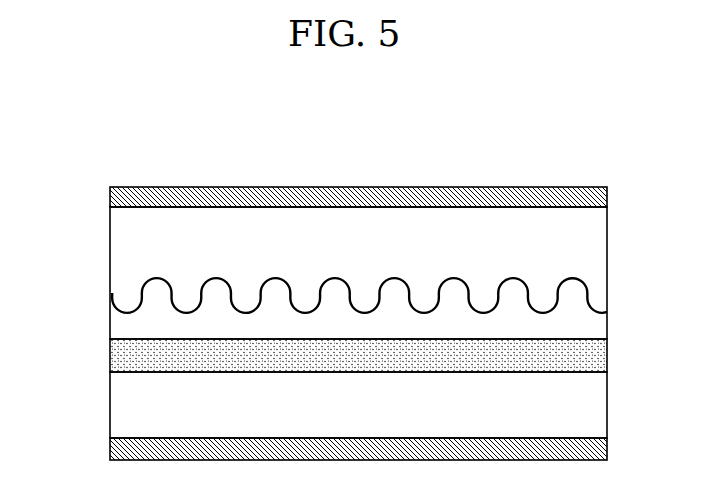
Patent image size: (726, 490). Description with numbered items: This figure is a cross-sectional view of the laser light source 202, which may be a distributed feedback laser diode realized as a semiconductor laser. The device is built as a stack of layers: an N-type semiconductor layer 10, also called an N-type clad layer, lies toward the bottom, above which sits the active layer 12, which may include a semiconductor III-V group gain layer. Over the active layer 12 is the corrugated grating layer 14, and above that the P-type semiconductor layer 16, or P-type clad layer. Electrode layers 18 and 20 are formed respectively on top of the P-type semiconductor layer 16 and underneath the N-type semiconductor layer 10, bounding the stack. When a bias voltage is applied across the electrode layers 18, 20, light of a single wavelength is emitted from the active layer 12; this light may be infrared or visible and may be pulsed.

The laser light source 202 is at (634, 120).
The N-type semiconductor layer 10 is at (596, 406).
The active layer 12 is at (596, 355).
The grating layer 14 is at (590, 294).
The P-type semiconductor layer 16 is at (596, 245).
The electrode layer 18 is at (596, 197).
The electrode layer 20 is at (596, 449).